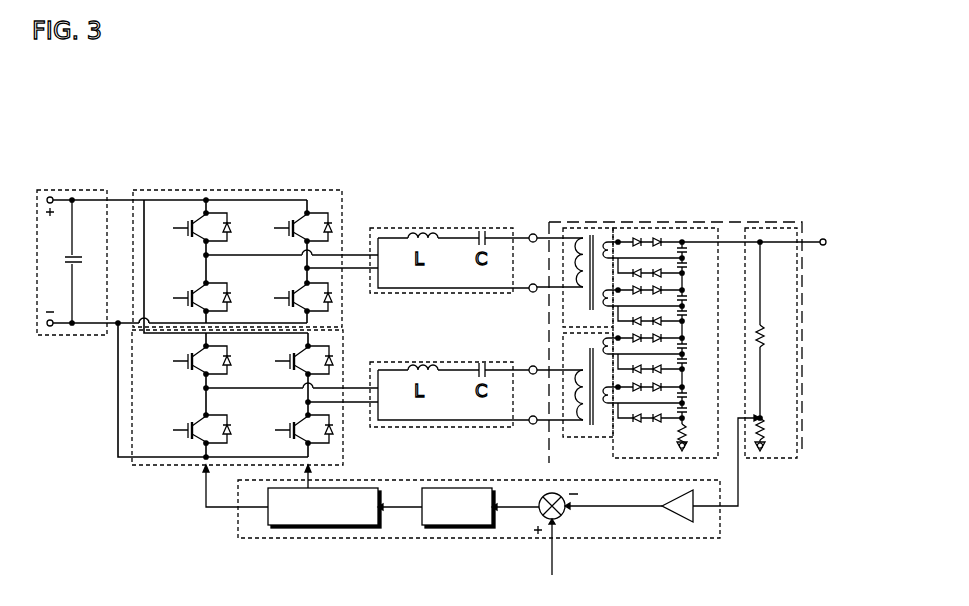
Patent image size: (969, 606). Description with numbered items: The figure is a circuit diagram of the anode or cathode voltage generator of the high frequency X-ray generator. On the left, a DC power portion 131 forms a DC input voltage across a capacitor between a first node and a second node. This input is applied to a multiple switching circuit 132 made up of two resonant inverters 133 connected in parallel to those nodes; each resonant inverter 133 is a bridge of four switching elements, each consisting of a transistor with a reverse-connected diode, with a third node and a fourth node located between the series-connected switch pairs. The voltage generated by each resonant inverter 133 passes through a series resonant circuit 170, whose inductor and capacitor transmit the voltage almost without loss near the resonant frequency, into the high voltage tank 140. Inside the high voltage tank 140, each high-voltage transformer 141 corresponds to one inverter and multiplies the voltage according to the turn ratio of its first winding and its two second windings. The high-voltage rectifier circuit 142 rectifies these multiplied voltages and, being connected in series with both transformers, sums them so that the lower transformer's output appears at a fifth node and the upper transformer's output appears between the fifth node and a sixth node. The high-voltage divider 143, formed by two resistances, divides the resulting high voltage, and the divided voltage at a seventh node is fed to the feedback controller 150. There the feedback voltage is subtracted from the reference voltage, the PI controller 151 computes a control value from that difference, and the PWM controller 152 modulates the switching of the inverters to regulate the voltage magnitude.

The DC power portion 131 is at (72, 190).
The resonant inverter 133 is at (233, 190).
The resonant circuit 170 is at (452, 228).
The high voltage tank 140 is at (786, 222).
The high-voltage transformer 141 is at (565, 230).
The high-voltage rectifier circuit 142 is at (722, 229).
The high-voltage divider 143 is at (797, 326).
The multiple switching circuit 132 is at (765, 432).
The feedback controller 150 is at (491, 506).
The PI controller 151 is at (475, 522).
The PWM controller 152 is at (362, 522).